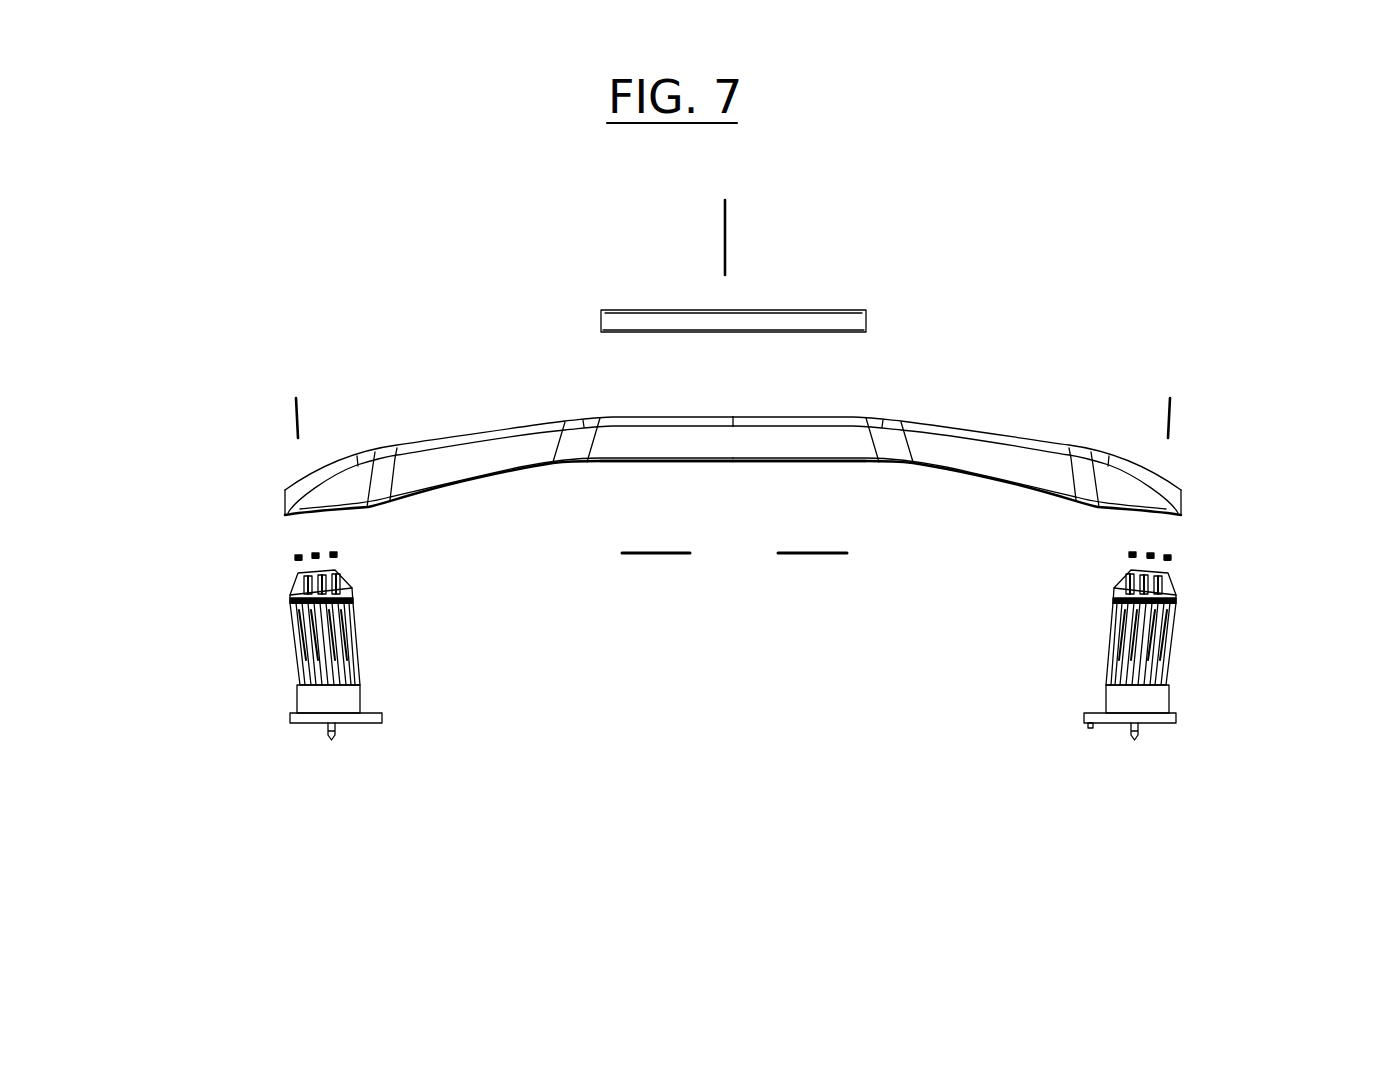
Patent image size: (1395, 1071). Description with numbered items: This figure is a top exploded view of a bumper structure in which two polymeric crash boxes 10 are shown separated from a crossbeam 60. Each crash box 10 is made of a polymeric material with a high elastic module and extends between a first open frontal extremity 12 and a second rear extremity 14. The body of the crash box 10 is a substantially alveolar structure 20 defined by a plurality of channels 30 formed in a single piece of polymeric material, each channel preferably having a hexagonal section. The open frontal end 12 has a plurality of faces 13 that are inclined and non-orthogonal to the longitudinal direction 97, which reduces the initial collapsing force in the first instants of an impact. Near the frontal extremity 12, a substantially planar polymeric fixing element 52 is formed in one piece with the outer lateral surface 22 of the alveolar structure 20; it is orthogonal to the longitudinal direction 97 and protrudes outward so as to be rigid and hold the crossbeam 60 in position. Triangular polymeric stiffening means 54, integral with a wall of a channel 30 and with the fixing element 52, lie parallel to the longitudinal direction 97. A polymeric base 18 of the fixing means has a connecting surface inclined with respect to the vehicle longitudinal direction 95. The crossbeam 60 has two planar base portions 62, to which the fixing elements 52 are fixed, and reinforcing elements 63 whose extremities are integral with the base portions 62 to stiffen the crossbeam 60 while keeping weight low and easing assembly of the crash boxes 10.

The crash box 10 is at (132, 593).
The first open frontal extremity 12 is at (245, 602).
The faces 13 is at (213, 543).
The second rear extremity 14 is at (193, 773).
The polymeric base 18 is at (433, 772).
The alveolar structure 20 is at (217, 446).
The outer lateral surface 22 is at (115, 687).
The channels 30 is at (372, 546).
The planar polymeric fixing element 52 is at (443, 632).
The polymeric stiffening means 54 is at (427, 688).
The crossbeam 60 is at (393, 407).
The planar base portions 62 is at (633, 463).
The reinforcing elements 63 is at (667, 555).
The longitudinal direction 95 is at (725, 243).
The longitudinal direction 97 is at (293, 415).